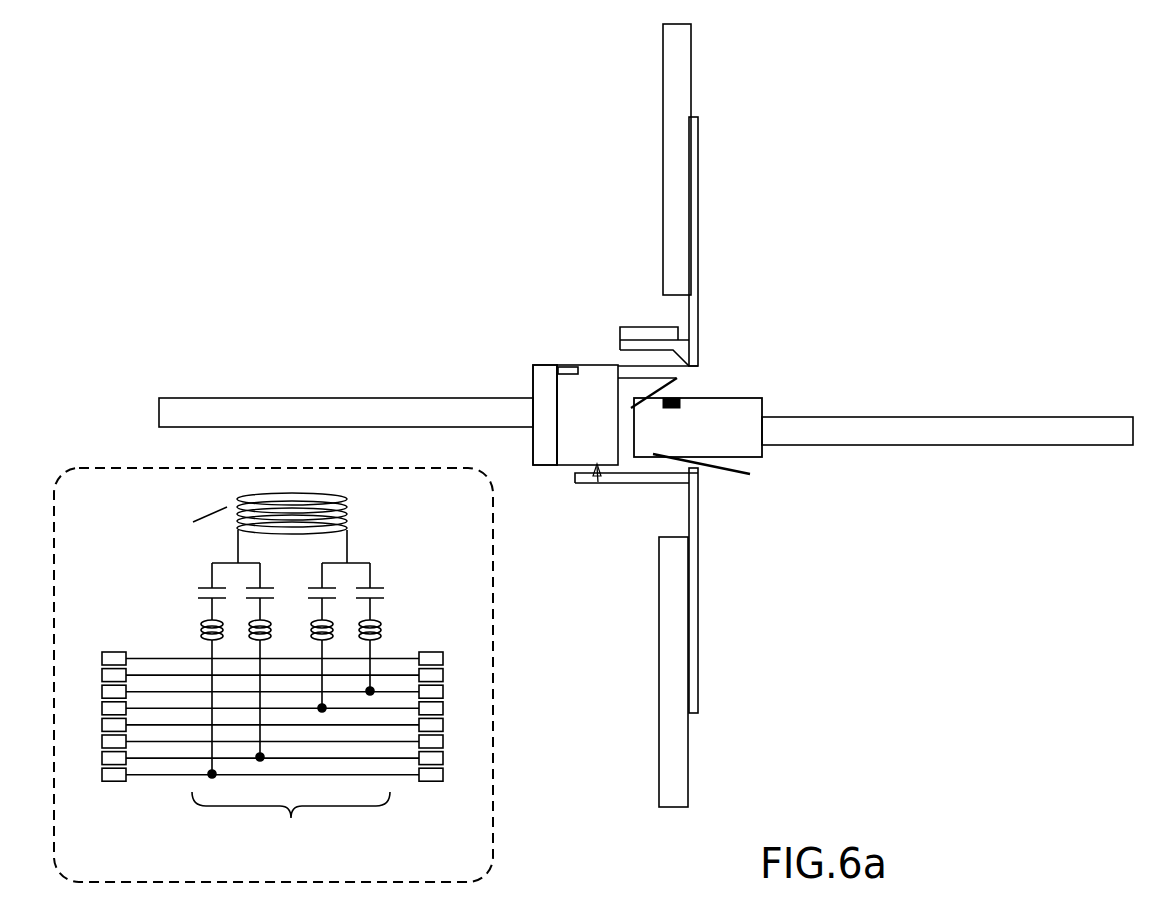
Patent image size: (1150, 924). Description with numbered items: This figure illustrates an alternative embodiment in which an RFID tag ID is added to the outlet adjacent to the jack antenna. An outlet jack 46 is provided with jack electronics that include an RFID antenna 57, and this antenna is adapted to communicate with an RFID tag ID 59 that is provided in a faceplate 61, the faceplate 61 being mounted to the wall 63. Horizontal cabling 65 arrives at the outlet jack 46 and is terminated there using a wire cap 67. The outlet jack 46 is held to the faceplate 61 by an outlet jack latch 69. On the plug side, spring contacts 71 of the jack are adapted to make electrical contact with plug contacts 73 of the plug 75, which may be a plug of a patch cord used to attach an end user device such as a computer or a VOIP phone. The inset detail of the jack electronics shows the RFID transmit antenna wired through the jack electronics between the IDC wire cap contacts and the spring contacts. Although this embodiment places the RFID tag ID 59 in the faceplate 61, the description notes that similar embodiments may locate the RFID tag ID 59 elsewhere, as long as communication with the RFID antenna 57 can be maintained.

The outlet jack 46 is at (524, 318).
The RFID antenna 57 is at (567, 367).
The RFID tag ID 59 is at (645, 327).
The faceplate 61 is at (694, 283).
The wall 63 is at (681, 72).
The horizontal cabling 65 is at (282, 408).
The wire cap 67 is at (543, 388).
The outlet jack latch 69 is at (607, 482).
The spring contacts 71 is at (677, 378).
The plug contacts 73 is at (672, 398).
The plug 75 is at (752, 458).